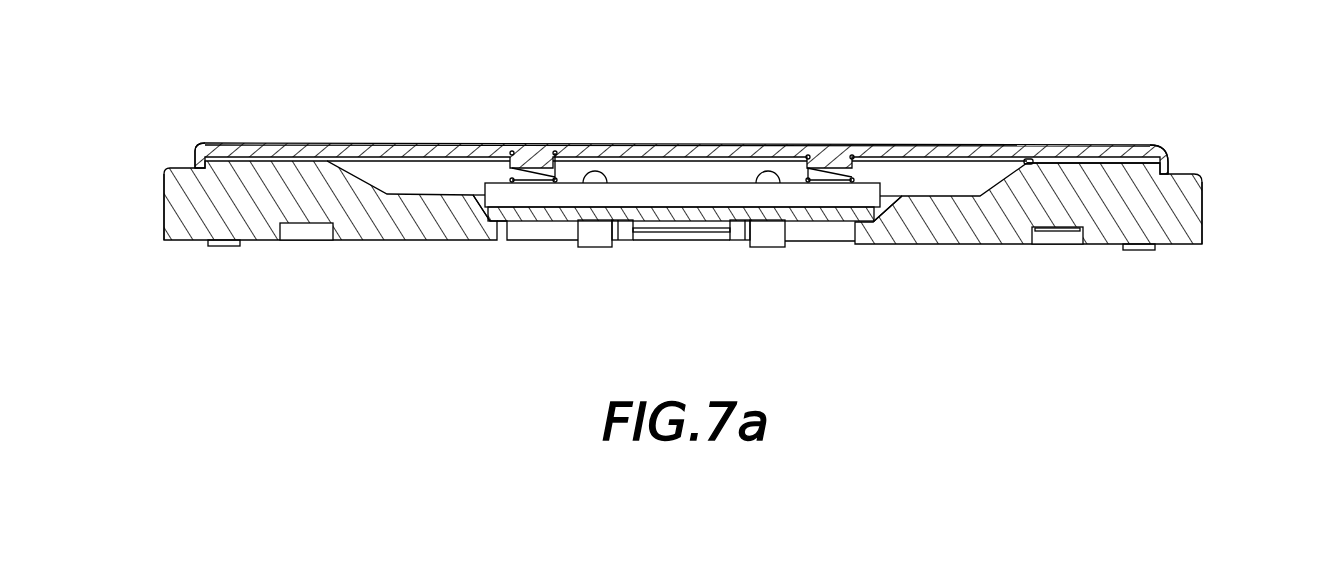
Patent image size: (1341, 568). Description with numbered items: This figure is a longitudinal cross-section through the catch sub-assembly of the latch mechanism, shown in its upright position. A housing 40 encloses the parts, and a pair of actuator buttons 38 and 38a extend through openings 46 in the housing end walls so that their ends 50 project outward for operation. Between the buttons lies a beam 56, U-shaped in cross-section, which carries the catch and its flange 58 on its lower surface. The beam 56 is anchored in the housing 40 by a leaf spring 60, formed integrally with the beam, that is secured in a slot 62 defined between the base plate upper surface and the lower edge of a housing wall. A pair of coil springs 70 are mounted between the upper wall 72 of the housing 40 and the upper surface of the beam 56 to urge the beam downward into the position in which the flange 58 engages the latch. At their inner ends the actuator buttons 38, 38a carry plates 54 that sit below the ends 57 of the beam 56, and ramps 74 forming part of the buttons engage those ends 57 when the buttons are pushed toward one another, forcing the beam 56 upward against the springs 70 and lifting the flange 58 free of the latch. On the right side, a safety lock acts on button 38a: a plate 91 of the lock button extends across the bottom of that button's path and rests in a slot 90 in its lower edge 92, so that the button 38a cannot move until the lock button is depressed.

The housing 40 is at (258, 142).
The upper wall 72 is at (654, 150).
The openings 46 is at (197, 176).
The ends 50 is at (163, 207).
The actuator button 38 is at (206, 220).
The actuator button 38a is at (1130, 196).
The lower edge 92 is at (957, 245).
The slot 90 is at (1080, 247).
The plate 91 is at (1055, 245).
The beam 56 is at (750, 202).
The coil springs 70 is at (557, 175).
The ramps 74 is at (472, 197).
The ends 57 is at (495, 200).
The plates 54 is at (498, 236).
The flange 58 is at (648, 235).
The slot 62 is at (698, 240).
The leaf spring 60 is at (723, 283).